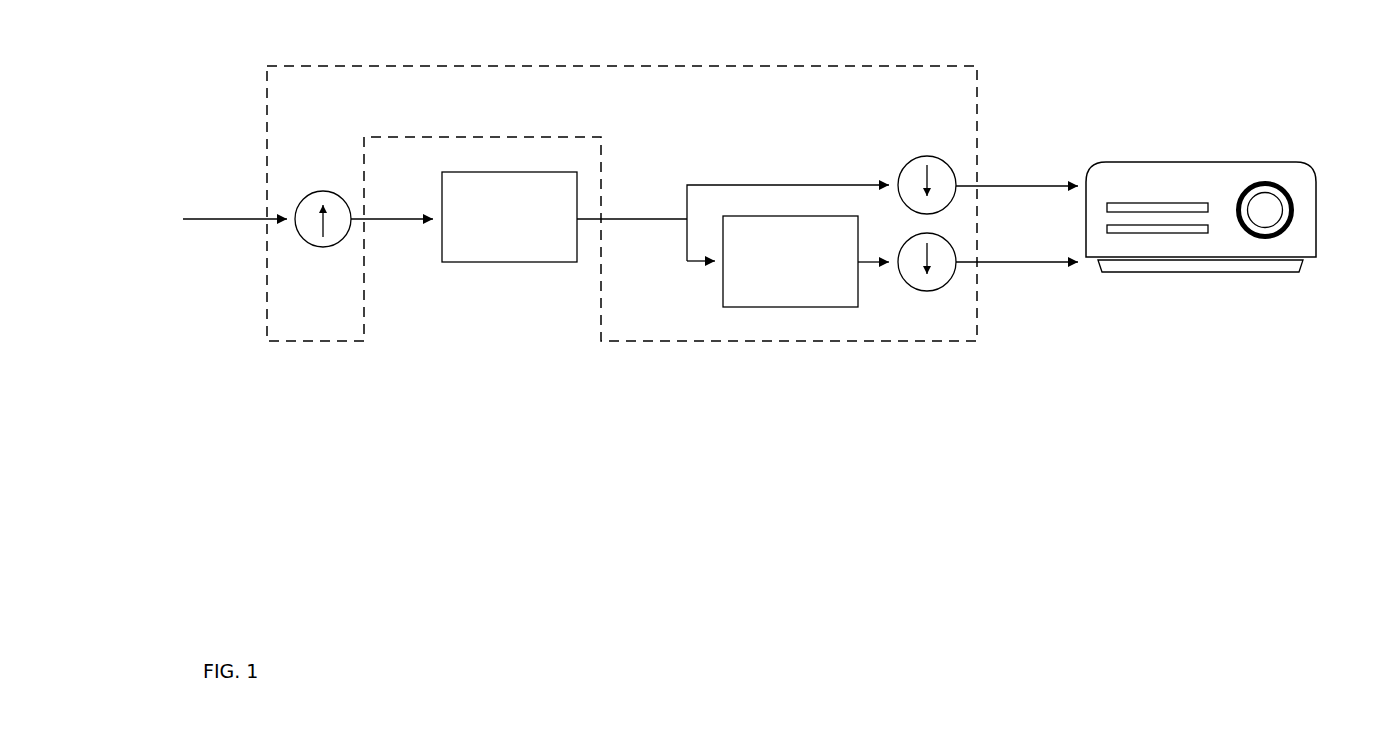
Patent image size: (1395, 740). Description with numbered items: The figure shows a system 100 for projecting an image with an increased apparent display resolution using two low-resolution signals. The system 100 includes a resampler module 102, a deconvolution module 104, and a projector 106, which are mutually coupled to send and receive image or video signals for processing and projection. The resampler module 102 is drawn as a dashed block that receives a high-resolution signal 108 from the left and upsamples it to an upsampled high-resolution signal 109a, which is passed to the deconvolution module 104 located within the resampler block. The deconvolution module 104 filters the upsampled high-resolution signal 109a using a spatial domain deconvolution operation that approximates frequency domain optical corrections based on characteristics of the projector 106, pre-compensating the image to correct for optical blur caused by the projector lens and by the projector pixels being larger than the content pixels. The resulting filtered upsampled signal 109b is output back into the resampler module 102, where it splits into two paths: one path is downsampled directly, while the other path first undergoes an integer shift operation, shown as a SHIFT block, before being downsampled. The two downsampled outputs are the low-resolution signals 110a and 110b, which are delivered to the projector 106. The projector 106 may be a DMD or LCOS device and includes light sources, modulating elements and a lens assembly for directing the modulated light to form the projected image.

The system 100 is at (1290, 130).
The resampler module 102 is at (622, 203).
The deconvolution module 104 is at (509, 217).
The projector 106 is at (1201, 206).
The high-resolution signal 108 is at (235, 207).
The upsampled high-resolution signal 109a is at (392, 207).
The filtered upsampled signal 109b is at (733, 223).
The low-resolution signal 110a is at (1017, 174).
The low-resolution signal 110b is at (1017, 249).